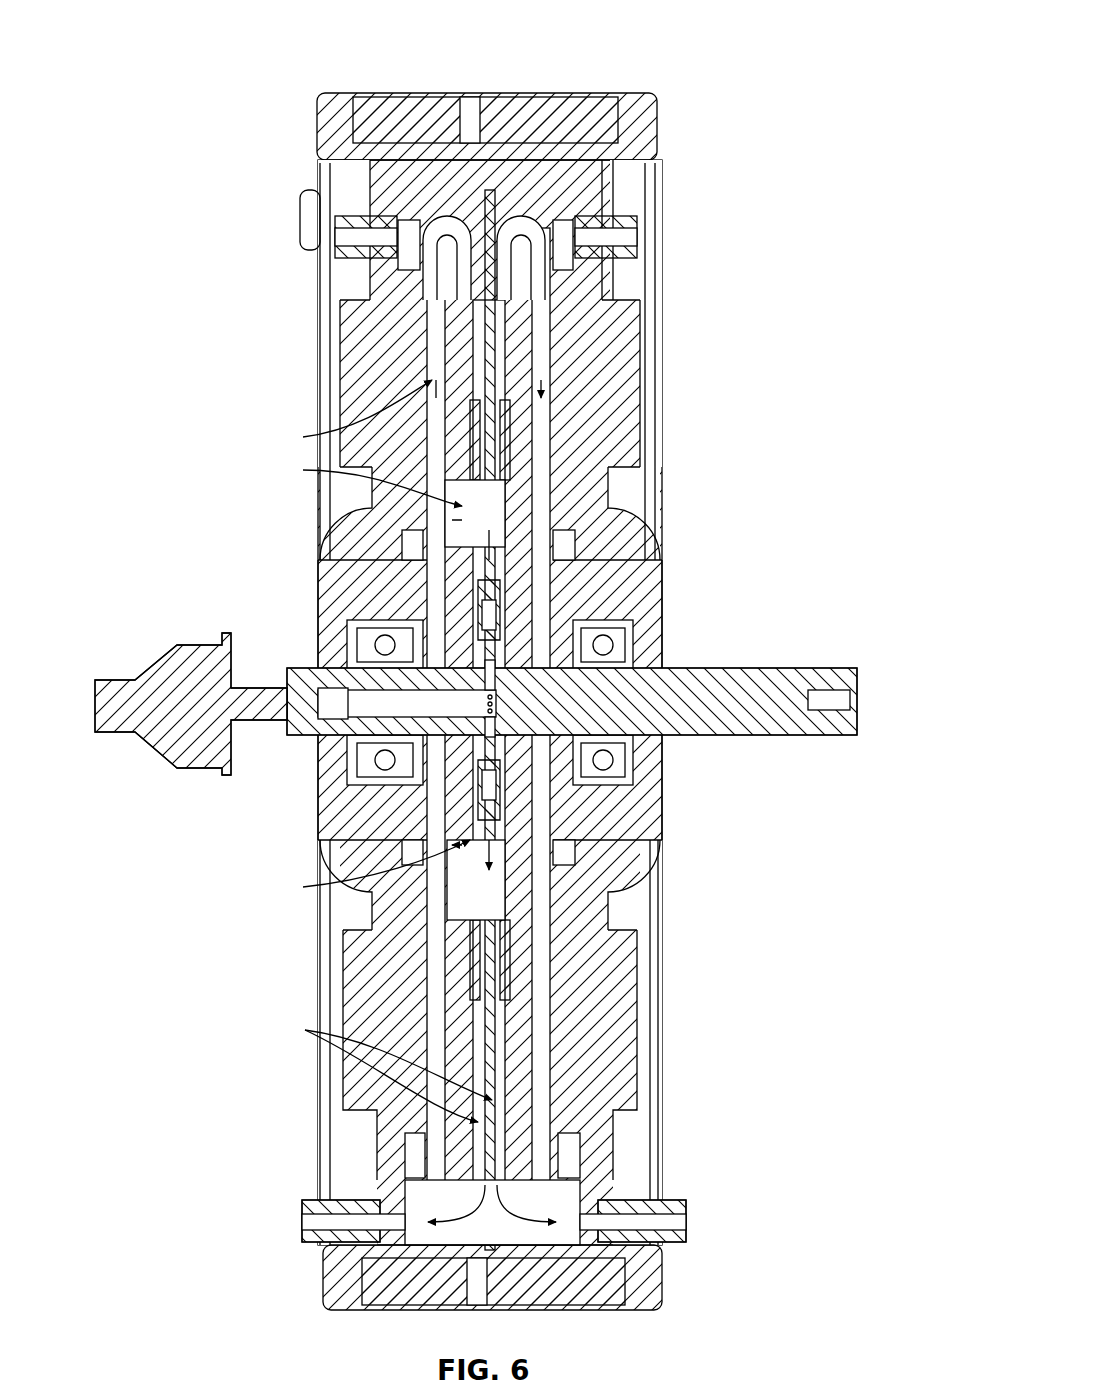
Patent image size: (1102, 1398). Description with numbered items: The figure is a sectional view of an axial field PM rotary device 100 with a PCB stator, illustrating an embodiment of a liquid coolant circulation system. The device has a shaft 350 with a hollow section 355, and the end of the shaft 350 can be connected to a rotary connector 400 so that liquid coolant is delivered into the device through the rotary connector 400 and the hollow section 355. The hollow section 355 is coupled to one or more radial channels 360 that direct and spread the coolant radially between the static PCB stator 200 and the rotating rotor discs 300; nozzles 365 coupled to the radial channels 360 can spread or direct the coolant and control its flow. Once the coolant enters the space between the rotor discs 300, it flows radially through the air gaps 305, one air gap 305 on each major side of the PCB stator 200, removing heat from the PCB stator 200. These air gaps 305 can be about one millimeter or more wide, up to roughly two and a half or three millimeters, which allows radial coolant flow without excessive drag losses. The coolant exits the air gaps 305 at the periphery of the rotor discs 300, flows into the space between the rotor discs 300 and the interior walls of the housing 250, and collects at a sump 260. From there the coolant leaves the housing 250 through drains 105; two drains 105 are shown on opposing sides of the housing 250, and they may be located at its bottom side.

The axial field PM rotary device 100 is at (476, 660).
The drains 105 is at (300, 1222).
The PCB stator 200 is at (437, 392).
The housing 250 is at (385, 158).
The sump 260 is at (566, 1190).
The rotor discs 300 is at (541, 392).
The air gaps 305 is at (478, 345).
The shaft 350 is at (788, 665).
The hollow section 355 is at (505, 722).
The radial channels 360 is at (498, 660).
The nozzles 365 is at (478, 598).
The rotary connector 400 is at (148, 692).